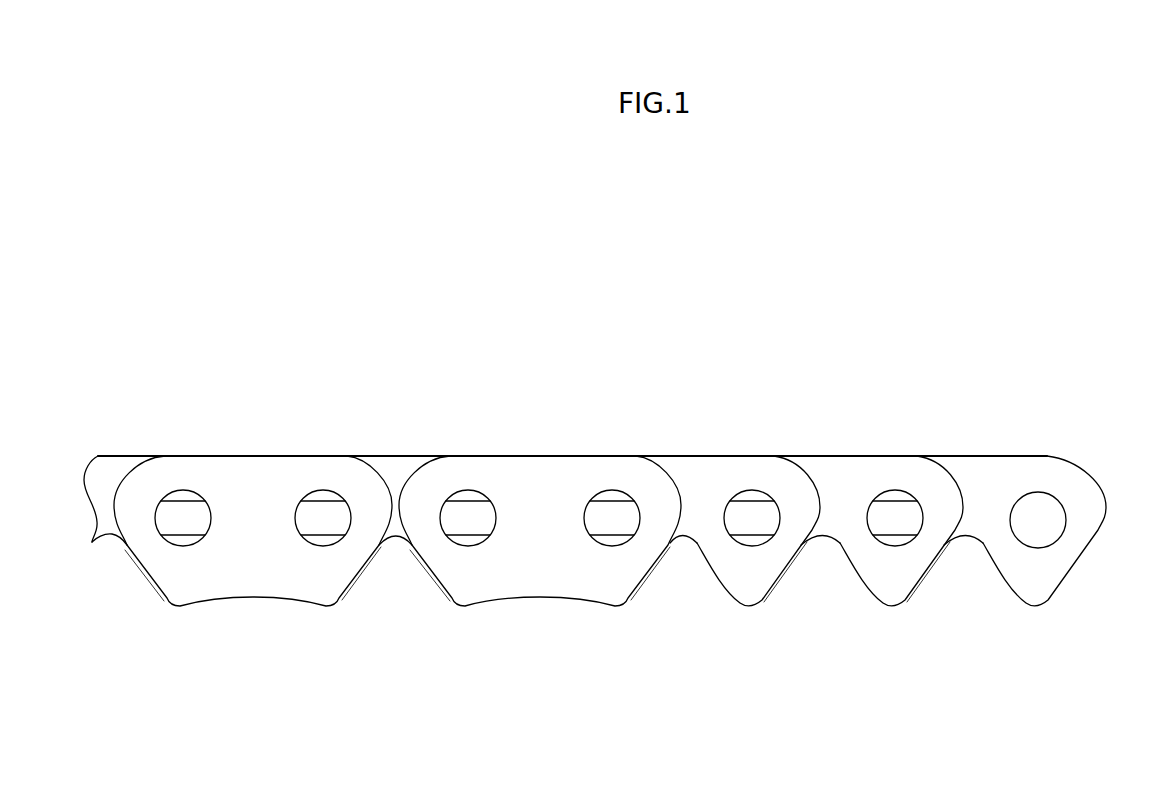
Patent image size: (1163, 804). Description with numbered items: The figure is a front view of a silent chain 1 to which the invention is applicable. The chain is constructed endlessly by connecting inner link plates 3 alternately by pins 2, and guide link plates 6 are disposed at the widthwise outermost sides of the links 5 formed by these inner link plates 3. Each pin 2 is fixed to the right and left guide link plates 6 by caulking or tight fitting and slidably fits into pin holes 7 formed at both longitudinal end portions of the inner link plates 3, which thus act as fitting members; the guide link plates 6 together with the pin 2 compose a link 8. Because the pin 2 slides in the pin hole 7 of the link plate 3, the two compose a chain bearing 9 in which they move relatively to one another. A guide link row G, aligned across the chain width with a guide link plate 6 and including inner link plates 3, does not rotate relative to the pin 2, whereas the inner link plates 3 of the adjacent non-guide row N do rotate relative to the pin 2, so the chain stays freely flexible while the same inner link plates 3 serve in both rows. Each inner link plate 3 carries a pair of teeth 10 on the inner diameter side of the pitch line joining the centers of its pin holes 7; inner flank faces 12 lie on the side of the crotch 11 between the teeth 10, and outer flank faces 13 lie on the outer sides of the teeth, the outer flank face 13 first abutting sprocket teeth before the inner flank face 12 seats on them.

The silent chain 1 is at (625, 293).
The pin 2 is at (183, 505).
The inner link plate 3 is at (700, 465).
The link 5 is at (983, 436).
The guide link plate 6 is at (243, 465).
The pin hole 7 is at (1042, 492).
The link 8 is at (250, 609).
The chain bearing 9 is at (467, 485).
The tooth 10 is at (747, 608).
The crotch 11 is at (824, 545).
The inner flank face 12 is at (936, 590).
The outer flank face 13 is at (1088, 556).
The guide link row G is at (522, 436).
The non-guide row N is at (672, 437).